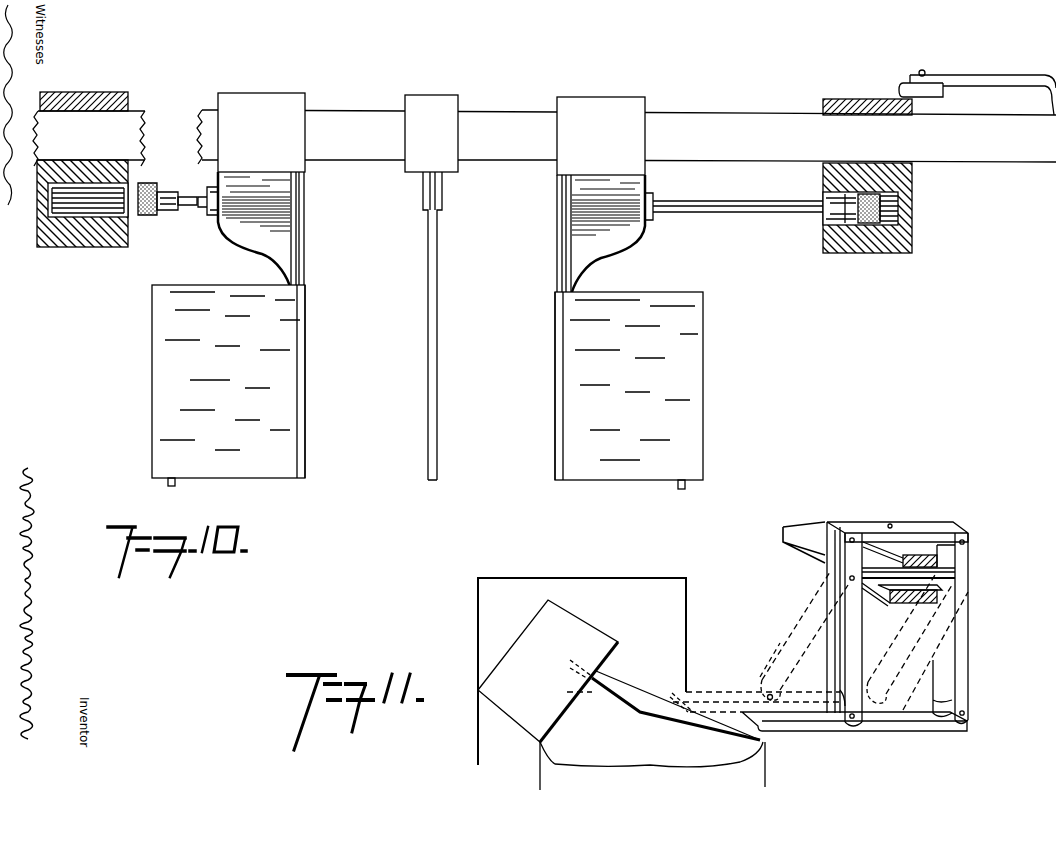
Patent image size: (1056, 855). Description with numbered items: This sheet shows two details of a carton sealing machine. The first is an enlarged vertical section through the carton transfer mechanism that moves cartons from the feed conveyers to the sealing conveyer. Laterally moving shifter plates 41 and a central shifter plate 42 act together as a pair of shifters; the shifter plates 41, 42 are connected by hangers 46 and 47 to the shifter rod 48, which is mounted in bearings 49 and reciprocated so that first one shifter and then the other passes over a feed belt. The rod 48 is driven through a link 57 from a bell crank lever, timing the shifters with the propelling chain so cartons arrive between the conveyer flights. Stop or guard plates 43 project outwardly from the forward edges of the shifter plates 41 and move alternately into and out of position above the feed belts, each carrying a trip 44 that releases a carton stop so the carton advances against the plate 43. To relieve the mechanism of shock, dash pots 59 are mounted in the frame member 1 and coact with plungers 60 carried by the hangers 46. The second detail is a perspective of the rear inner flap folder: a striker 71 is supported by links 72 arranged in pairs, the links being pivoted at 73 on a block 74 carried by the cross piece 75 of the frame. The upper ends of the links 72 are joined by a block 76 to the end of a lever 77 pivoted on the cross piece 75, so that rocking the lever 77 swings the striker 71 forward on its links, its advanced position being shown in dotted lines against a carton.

In FIG. 10, the frame bearing block 1 is at (40, 247).
In FIG. 10, the shifter plate 41 is at (306, 366).
In FIG. 10, the shifter plate 42 is at (440, 440).
In FIG. 10, the stop or guard plate 43 is at (165, 373).
In FIG. 10, the trip 44 is at (168, 485).
In FIG. 10, the hanger 46 is at (288, 110).
In FIG. 10, the hanger 47 is at (445, 110).
In FIG. 10, the shifter rod 48 is at (725, 120).
In FIG. 10, the bearing 49 is at (105, 92).
In FIG. 10, the link 57 is at (990, 75).
In FIG. 10, the dash pot 59 is at (77, 250).
In FIG. 10, the plunger 60 is at (872, 218).
In FIG. 11, the striker 71 is at (903, 731).
In FIG. 11, the link 72 is at (850, 625).
In FIG. 11, the pivot 73 is at (962, 583).
In FIG. 11, the block 74 is at (930, 577).
In FIG. 11, the cross piece 75 is at (801, 530).
In FIG. 11, the block 76 is at (911, 522).
In FIG. 11, the lever 77 is at (920, 554).